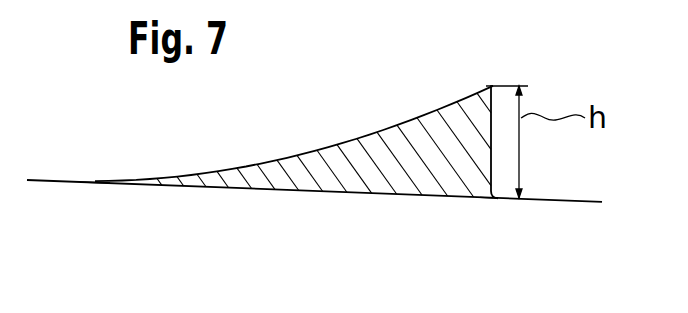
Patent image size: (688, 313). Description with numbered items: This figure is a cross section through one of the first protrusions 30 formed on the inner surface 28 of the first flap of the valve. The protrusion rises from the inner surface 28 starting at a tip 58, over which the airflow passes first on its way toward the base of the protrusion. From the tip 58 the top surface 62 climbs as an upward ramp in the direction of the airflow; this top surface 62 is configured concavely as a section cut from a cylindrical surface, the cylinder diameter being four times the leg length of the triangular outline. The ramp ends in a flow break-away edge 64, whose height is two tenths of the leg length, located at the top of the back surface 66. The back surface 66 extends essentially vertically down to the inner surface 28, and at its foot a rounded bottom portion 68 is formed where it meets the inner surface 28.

The inner surface 28 is at (570, 203).
The first protrusions 30 is at (350, 181).
The tip 58 is at (93, 178).
The top surface 62 is at (343, 147).
The flow break-away edge 64 is at (495, 84).
The back surface 66 is at (493, 143).
The rounded bottom portion 68 is at (485, 199).